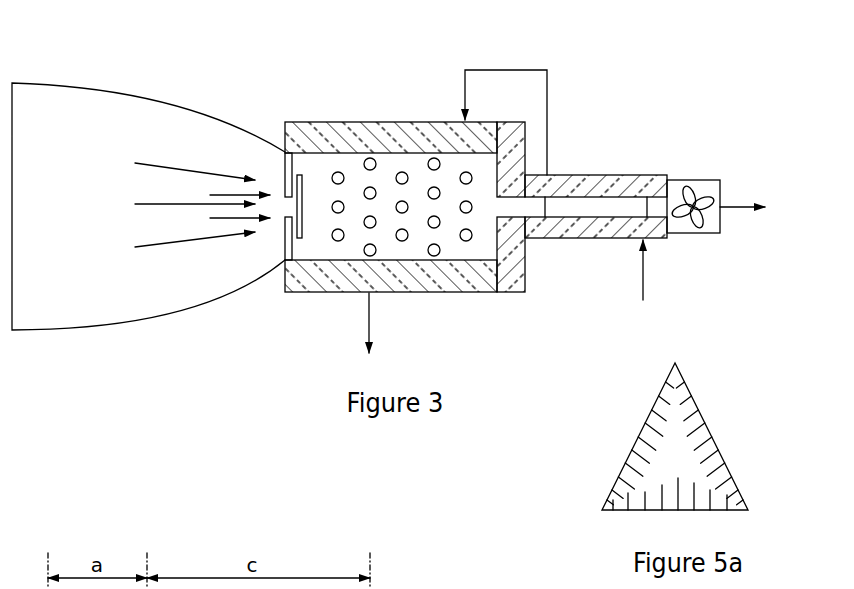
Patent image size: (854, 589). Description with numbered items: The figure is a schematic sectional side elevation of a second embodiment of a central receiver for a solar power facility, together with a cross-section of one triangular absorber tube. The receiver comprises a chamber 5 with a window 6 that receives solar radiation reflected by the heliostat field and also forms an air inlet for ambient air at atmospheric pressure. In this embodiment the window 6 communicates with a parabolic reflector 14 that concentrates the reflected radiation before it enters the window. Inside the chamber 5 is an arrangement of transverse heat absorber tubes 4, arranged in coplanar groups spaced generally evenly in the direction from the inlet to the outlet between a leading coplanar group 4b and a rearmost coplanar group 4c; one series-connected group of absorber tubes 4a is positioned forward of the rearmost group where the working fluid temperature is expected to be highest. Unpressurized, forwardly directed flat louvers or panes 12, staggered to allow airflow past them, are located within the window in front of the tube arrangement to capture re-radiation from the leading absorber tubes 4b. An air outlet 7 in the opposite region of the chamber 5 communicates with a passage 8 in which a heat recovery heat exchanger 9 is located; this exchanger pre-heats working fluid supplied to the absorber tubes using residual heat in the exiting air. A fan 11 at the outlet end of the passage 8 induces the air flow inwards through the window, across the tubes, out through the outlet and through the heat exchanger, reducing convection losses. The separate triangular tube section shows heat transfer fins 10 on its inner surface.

In FIG. 3, the parabolic reflector 14 is at (118, 147).
In FIG. 3, the window 6 is at (283, 174).
In FIG. 3, the louvers or panes 12 is at (292, 216).
In FIG. 3, the leading coplanar group of absorber tubes 4b is at (338, 235).
In FIG. 3, the group of absorber tubes 4a is at (370, 222).
In FIG. 3, the heat absorber tubes 4 is at (434, 250).
In FIG. 3, the rearmost coplanar group of absorber tubes 4c is at (466, 235).
In FIG. 3, the chamber 5 is at (448, 177).
In FIG. 3, the air outlet 7 is at (496, 203).
In FIG. 3, the passage 8 is at (522, 203).
In FIG. 3, the heat recovery heat exchanger 9 is at (600, 203).
In FIG. 3, the fan 11 is at (693, 207).
In FIG. 5A, the heat transfer fins 10 is at (637, 442).